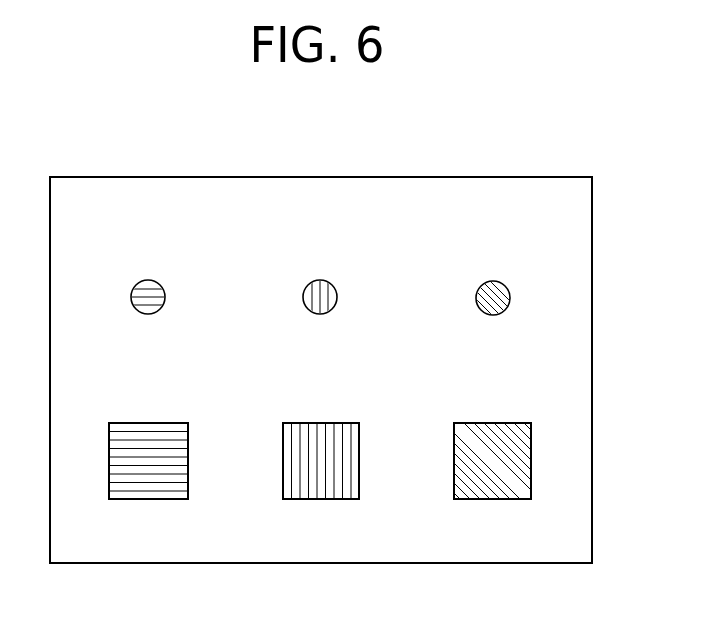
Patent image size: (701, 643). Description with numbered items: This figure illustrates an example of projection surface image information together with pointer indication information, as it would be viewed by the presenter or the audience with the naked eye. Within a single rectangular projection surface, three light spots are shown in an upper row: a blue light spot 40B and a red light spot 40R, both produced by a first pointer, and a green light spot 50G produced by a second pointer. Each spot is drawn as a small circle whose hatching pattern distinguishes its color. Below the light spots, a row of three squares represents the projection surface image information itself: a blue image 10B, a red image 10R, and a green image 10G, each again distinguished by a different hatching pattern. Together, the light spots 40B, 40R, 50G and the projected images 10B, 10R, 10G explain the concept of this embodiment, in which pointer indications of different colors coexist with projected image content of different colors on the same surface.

The blue light spot 40B is at (148, 280).
The red light spot 40R is at (320, 280).
The green light spot 50G is at (493, 282).
The blue image 10B is at (155, 500).
The red image 10R is at (323, 500).
The green image 10G is at (492, 500).